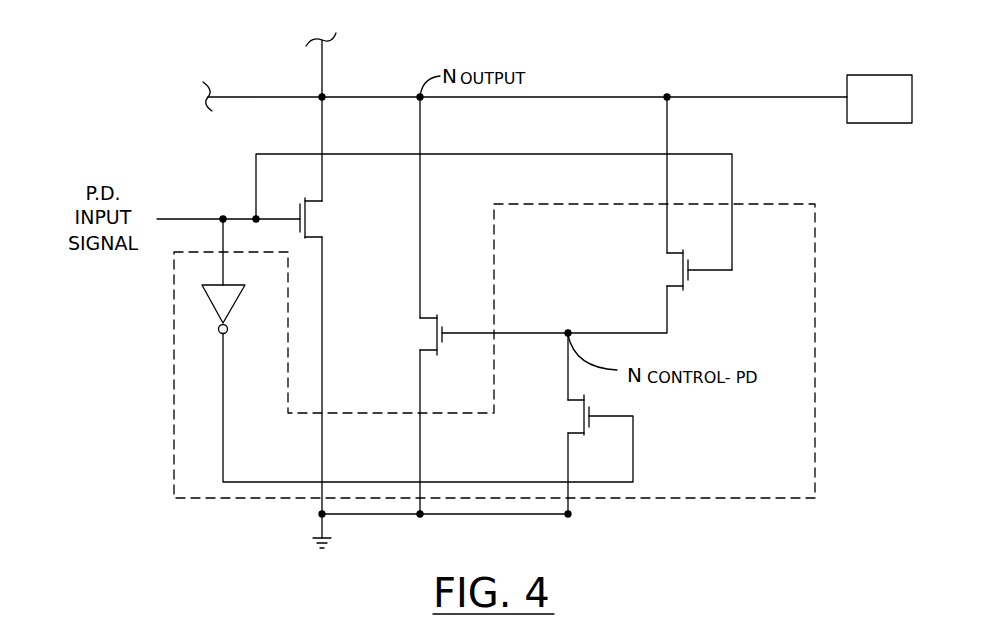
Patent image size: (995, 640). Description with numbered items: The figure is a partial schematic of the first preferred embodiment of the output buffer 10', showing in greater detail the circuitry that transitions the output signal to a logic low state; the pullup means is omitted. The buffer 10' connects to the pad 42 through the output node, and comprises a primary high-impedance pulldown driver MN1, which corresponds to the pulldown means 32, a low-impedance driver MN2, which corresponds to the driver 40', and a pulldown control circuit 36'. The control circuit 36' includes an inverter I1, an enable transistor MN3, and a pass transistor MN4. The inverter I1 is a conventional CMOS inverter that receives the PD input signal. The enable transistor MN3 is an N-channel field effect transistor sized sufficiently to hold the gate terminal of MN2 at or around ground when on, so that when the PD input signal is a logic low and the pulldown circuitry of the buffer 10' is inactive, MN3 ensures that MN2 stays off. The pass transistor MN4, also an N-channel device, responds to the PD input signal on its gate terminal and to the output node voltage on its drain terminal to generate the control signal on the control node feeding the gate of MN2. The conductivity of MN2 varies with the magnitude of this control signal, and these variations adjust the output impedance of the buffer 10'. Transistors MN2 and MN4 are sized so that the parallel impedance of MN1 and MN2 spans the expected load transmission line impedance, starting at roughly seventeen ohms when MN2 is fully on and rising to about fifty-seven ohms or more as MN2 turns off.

The output buffer 10' is at (254, 50).
The pad 42 is at (866, 75).
The pulldown means 32 is at (321, 207).
The driver 40' is at (418, 324).
The pulldown control circuit 36' is at (675, 306).
The inverter I1 is at (238, 284).
The primary high-impedance pulldown driver MN1 is at (295, 185).
The low-impedance driver MN2 is at (428, 333).
The enable transistor MN3 is at (575, 416).
The pass transistor MN4 is at (672, 270).